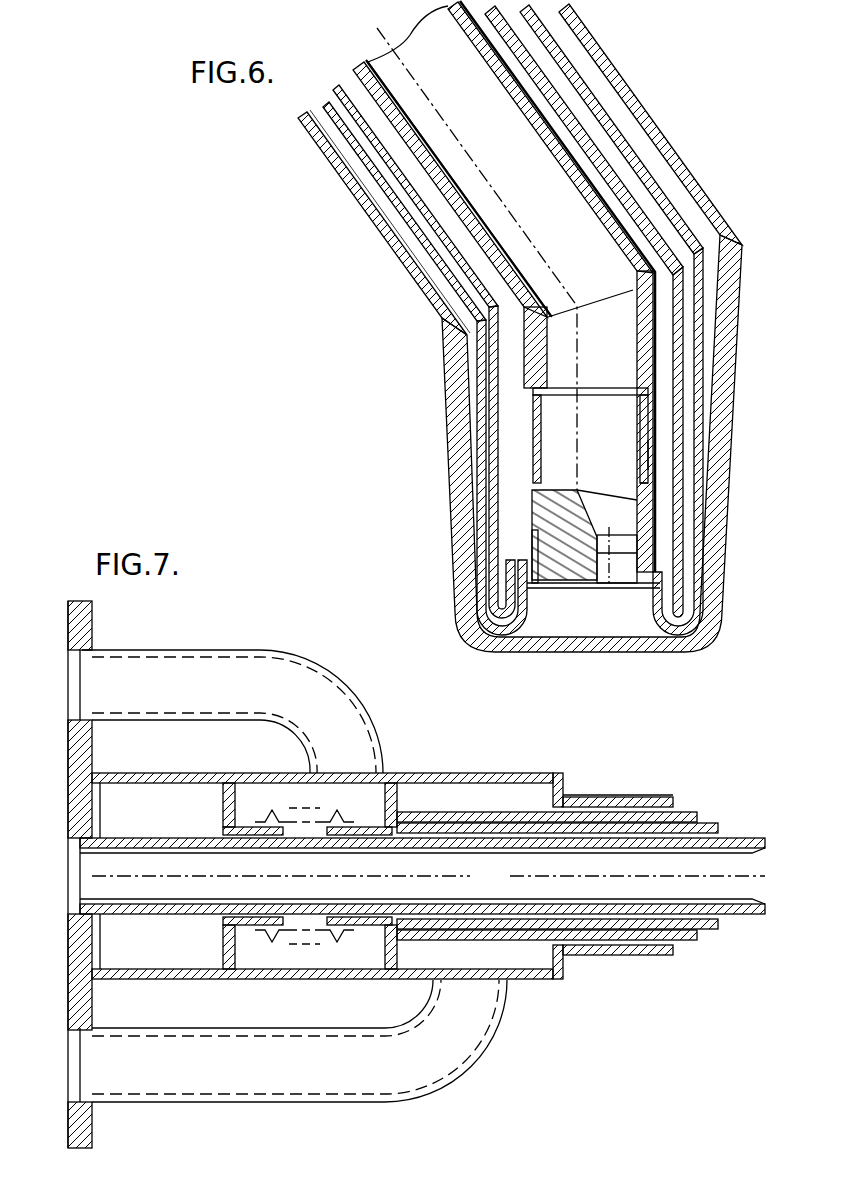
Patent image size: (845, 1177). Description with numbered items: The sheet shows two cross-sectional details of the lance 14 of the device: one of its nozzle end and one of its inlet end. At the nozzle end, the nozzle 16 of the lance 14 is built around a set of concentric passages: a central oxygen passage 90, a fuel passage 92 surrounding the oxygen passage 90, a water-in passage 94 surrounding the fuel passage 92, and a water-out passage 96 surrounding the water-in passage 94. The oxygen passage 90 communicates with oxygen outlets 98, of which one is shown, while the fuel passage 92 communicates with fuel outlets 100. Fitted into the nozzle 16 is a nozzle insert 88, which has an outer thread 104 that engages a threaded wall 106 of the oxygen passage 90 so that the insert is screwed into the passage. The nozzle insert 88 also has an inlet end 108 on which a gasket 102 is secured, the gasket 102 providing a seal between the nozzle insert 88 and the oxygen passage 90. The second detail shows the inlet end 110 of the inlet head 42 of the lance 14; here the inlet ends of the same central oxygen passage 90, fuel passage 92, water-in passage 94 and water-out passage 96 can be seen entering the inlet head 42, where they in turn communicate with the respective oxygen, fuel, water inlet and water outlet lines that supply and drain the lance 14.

In FIG. 6, the lance 14 is at (372, 250).
In FIG. 7, the lance 14 is at (672, 797).
In FIG. 6, the nozzle 16 is at (440, 520).
In FIG. 7, the inlet head 42 is at (478, 766).
In FIG. 6, the nozzle insert 88 is at (560, 572).
In FIG. 6, the central oxygen passage 90 is at (683, 222).
In FIG. 7, the central oxygen passage 90 is at (503, 889).
In FIG. 6, the fuel passage 92 is at (650, 198).
In FIG. 7, the fuel passage 92 is at (568, 929).
In FIG. 6, the water-in passage 94 is at (630, 144).
In FIG. 7, the water-in passage 94 is at (632, 941).
In FIG. 6, the water-out passage 96 is at (606, 82).
In FIG. 7, the water-out passage 96 is at (660, 956).
In FIG. 6, the oxygen outlet 98 is at (612, 600).
In FIG. 6, the fuel outlet 100 is at (538, 596).
In FIG. 6, the gasket 102 is at (554, 386).
In FIG. 6, the outer thread 104 is at (650, 470).
In FIG. 6, the threaded wall 106 is at (648, 452).
In FIG. 6, the inlet end 108 is at (633, 410).
In FIG. 7, the inlet end 110 is at (68, 812).